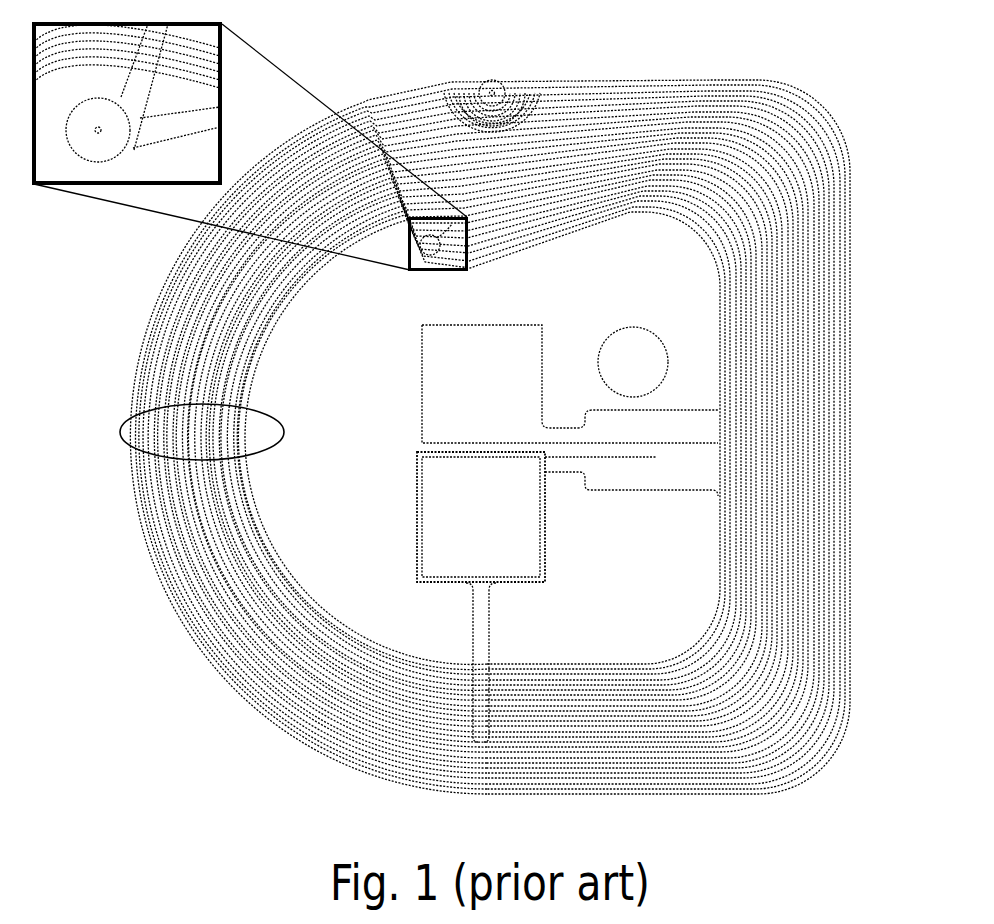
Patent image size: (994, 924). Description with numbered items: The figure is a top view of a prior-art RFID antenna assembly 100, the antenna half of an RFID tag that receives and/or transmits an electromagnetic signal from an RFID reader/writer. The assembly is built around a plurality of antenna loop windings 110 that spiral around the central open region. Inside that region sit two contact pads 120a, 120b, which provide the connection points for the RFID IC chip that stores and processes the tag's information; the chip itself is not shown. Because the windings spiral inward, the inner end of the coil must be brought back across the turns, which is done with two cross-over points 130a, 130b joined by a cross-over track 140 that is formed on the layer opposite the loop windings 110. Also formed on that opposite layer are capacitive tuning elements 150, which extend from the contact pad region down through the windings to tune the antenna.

The RFID antenna assembly 100 is at (738, 31).
The antenna loop windings 110 is at (119, 433).
The contact pad 120a is at (570, 384).
The contact pad 120b is at (567, 517).
The cross-over point 130a is at (108, 137).
The cross-over point 130b is at (492, 80).
The cross-over track 140 is at (136, 85).
The capacitive tuning elements 150 is at (472, 607).